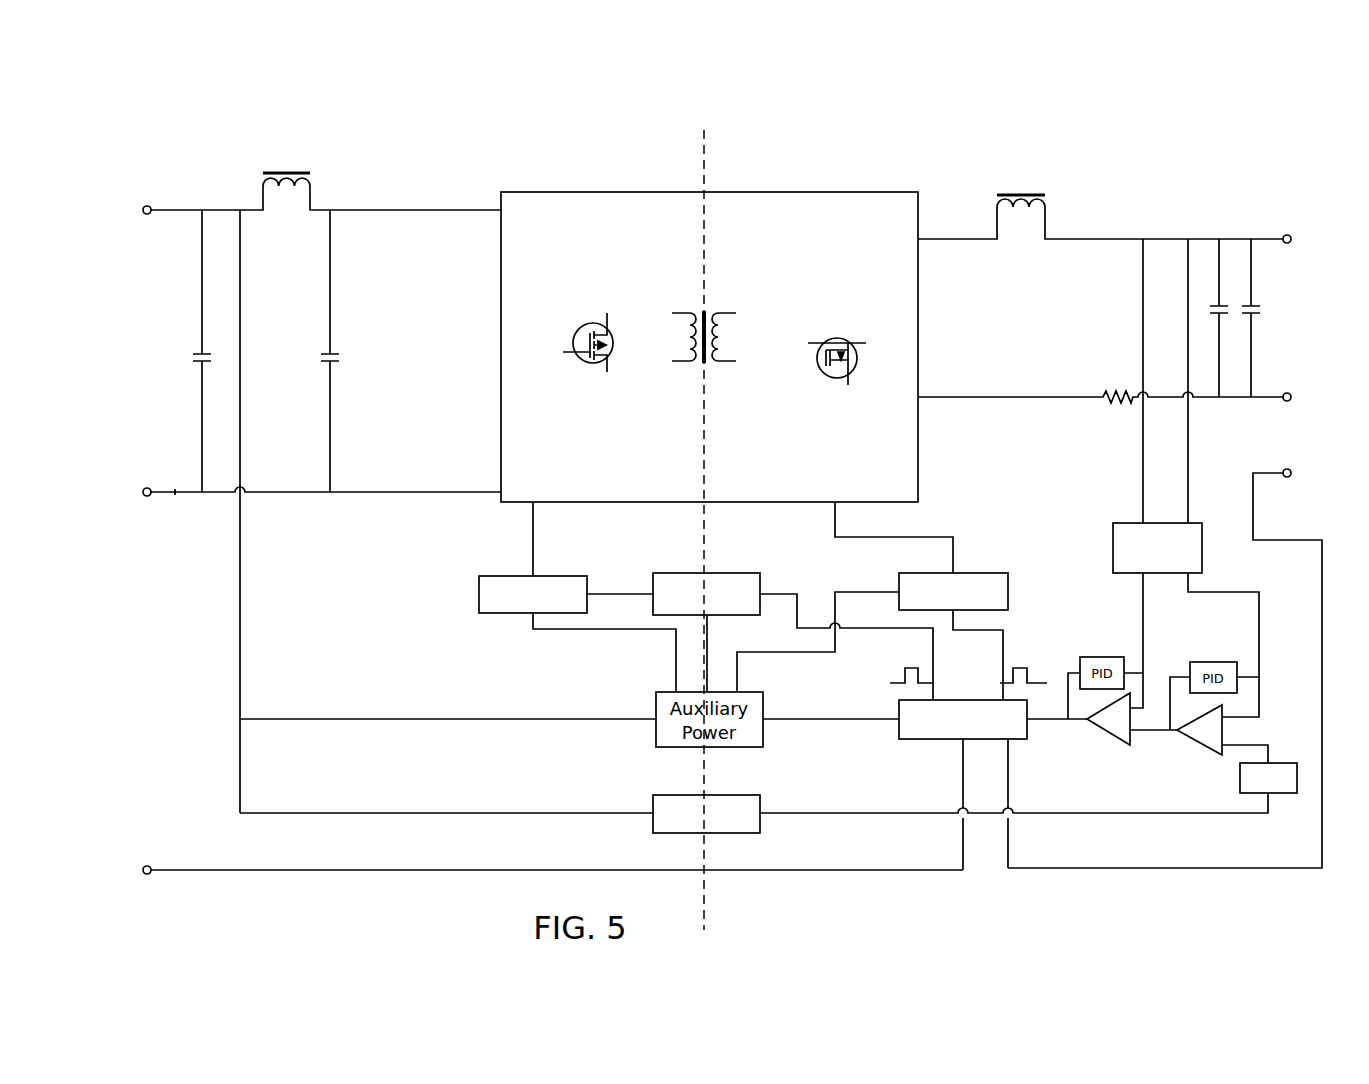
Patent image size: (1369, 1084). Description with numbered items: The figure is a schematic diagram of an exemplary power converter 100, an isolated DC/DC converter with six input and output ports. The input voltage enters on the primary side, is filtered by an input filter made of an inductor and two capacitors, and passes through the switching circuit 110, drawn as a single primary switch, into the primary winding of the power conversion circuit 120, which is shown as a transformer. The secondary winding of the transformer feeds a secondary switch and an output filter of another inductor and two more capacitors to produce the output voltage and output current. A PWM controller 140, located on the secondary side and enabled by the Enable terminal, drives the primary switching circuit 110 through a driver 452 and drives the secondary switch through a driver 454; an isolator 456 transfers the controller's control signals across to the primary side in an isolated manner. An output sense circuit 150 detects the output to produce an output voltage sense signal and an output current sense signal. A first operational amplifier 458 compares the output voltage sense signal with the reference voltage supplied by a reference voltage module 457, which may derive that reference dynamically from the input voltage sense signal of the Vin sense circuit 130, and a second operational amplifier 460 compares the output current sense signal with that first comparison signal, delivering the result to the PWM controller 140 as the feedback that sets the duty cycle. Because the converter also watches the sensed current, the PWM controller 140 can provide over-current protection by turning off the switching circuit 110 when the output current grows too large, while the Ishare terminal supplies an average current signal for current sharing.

The power converter 100 is at (272, 112).
The switching circuit 110 is at (582, 283).
The power conversion circuit 120 is at (700, 274).
The Vin sense circuit 130 is at (653, 800).
The PWM controller 140 is at (925, 742).
The output sense circuit 150 is at (1113, 541).
The driver 452 is at (512, 575).
The driver 454 is at (1010, 592).
The isolator 456 is at (728, 572).
The reference voltage module 457 is at (1278, 762).
The first operational amplifier 458 is at (1215, 752).
The second operational amplifier 460 is at (1112, 737).